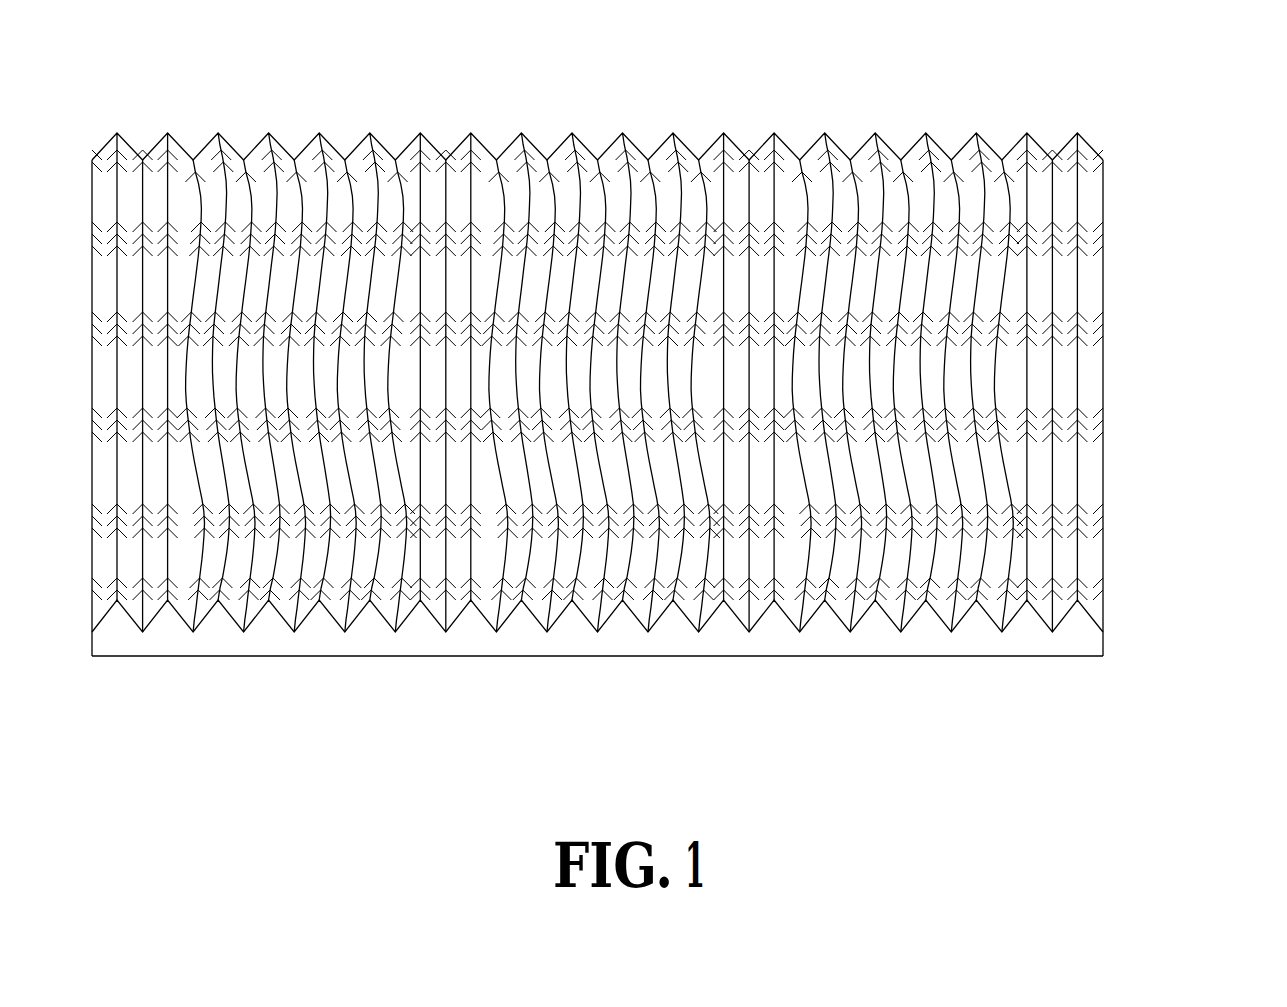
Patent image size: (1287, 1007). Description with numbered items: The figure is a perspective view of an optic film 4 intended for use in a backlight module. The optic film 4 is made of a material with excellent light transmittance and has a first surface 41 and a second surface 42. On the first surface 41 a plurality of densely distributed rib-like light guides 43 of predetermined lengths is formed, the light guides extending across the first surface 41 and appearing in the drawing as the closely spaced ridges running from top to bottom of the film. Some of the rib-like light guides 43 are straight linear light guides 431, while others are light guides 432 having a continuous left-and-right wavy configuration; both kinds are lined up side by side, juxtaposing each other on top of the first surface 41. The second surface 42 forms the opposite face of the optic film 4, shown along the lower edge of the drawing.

The optic film 4 is at (678, 398).
The first surface 41 is at (668, 344).
The second surface 42 is at (928, 657).
The rib-like light guides 43 is at (1025, 316).
The straight linear light guides 431 is at (1093, 140).
The wavy light guides 432 is at (977, 131).